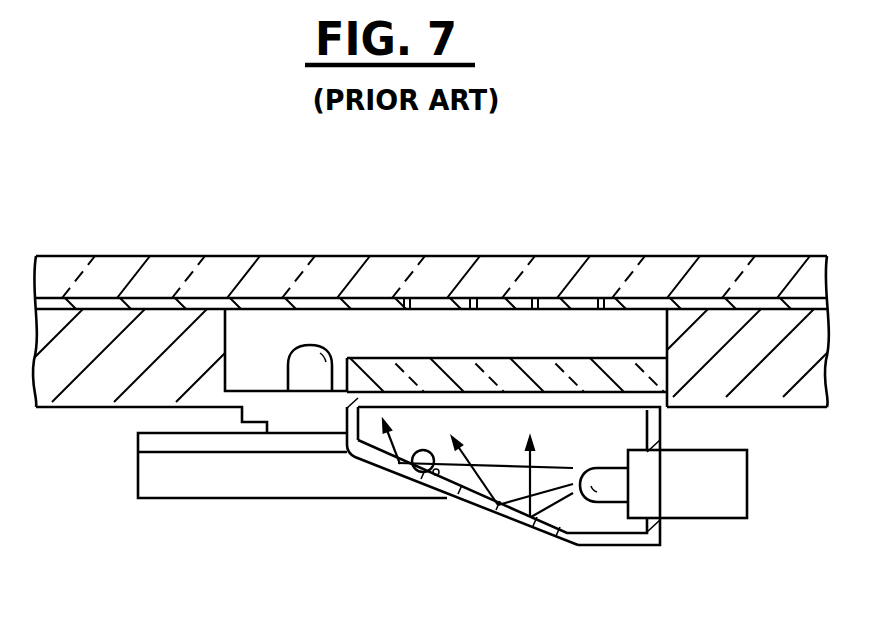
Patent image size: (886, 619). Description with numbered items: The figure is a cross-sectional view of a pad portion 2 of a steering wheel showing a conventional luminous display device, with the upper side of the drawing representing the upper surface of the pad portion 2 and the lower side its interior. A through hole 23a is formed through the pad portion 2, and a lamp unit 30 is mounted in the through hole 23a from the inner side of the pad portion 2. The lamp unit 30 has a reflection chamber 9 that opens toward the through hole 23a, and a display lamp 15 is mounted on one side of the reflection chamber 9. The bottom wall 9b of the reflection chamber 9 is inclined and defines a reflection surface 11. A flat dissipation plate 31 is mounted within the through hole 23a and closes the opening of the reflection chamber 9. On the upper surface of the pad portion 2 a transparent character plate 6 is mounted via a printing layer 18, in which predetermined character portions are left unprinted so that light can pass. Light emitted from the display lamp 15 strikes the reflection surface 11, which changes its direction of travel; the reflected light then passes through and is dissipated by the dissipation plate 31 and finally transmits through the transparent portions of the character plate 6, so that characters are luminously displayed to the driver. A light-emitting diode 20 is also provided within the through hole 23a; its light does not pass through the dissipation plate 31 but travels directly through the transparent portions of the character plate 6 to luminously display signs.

The pad portion 2 is at (578, 256).
The character plate 6 is at (183, 268).
The printing layer 18 is at (741, 302).
The through hole 23a is at (667, 322).
The dissipation plate 31 is at (466, 365).
The light-emitting diode 20 is at (288, 366).
The reflection chamber 9 is at (604, 522).
The lamp unit 30 is at (541, 533).
The bottom wall 9b is at (483, 508).
The reflection surface 11 is at (425, 478).
The display lamp 15 is at (600, 469).